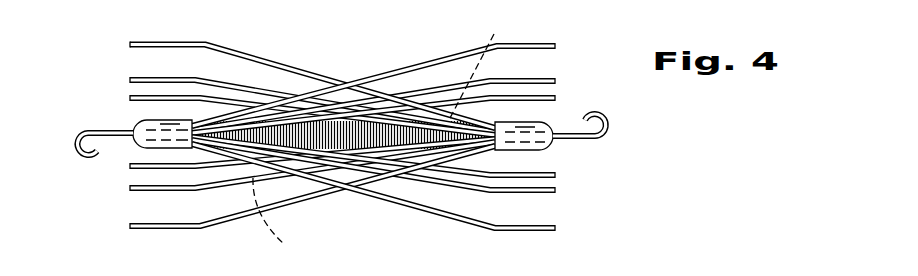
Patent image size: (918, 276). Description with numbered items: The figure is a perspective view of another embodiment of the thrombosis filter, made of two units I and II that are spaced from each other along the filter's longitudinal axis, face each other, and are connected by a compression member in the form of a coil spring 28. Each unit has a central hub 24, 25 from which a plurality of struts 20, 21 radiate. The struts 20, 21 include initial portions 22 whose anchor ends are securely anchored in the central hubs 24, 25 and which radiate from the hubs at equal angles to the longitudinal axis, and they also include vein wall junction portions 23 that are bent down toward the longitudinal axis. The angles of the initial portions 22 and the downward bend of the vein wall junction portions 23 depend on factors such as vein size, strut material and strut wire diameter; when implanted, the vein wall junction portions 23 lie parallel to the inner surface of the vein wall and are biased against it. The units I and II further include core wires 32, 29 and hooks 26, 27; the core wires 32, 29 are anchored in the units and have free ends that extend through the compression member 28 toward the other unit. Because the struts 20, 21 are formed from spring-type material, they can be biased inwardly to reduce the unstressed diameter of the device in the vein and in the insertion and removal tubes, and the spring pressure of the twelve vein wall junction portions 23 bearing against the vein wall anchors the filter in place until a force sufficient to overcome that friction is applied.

The struts 20 is at (573, 45).
The struts 21 is at (112, 47).
The initial portions 22 is at (280, 63).
The vein wall junction portions 23 is at (157, 41).
The central hub 24 is at (140, 147).
The central hub 25 is at (549, 149).
The hook 26 is at (77, 133).
The hook 27 is at (610, 116).
The coil spring 28 is at (381, 128).
The core wire 29 is at (494, 35).
The core wire 32 is at (283, 222).
The filter unit I is at (568, 128).
The filter unit II is at (128, 141).